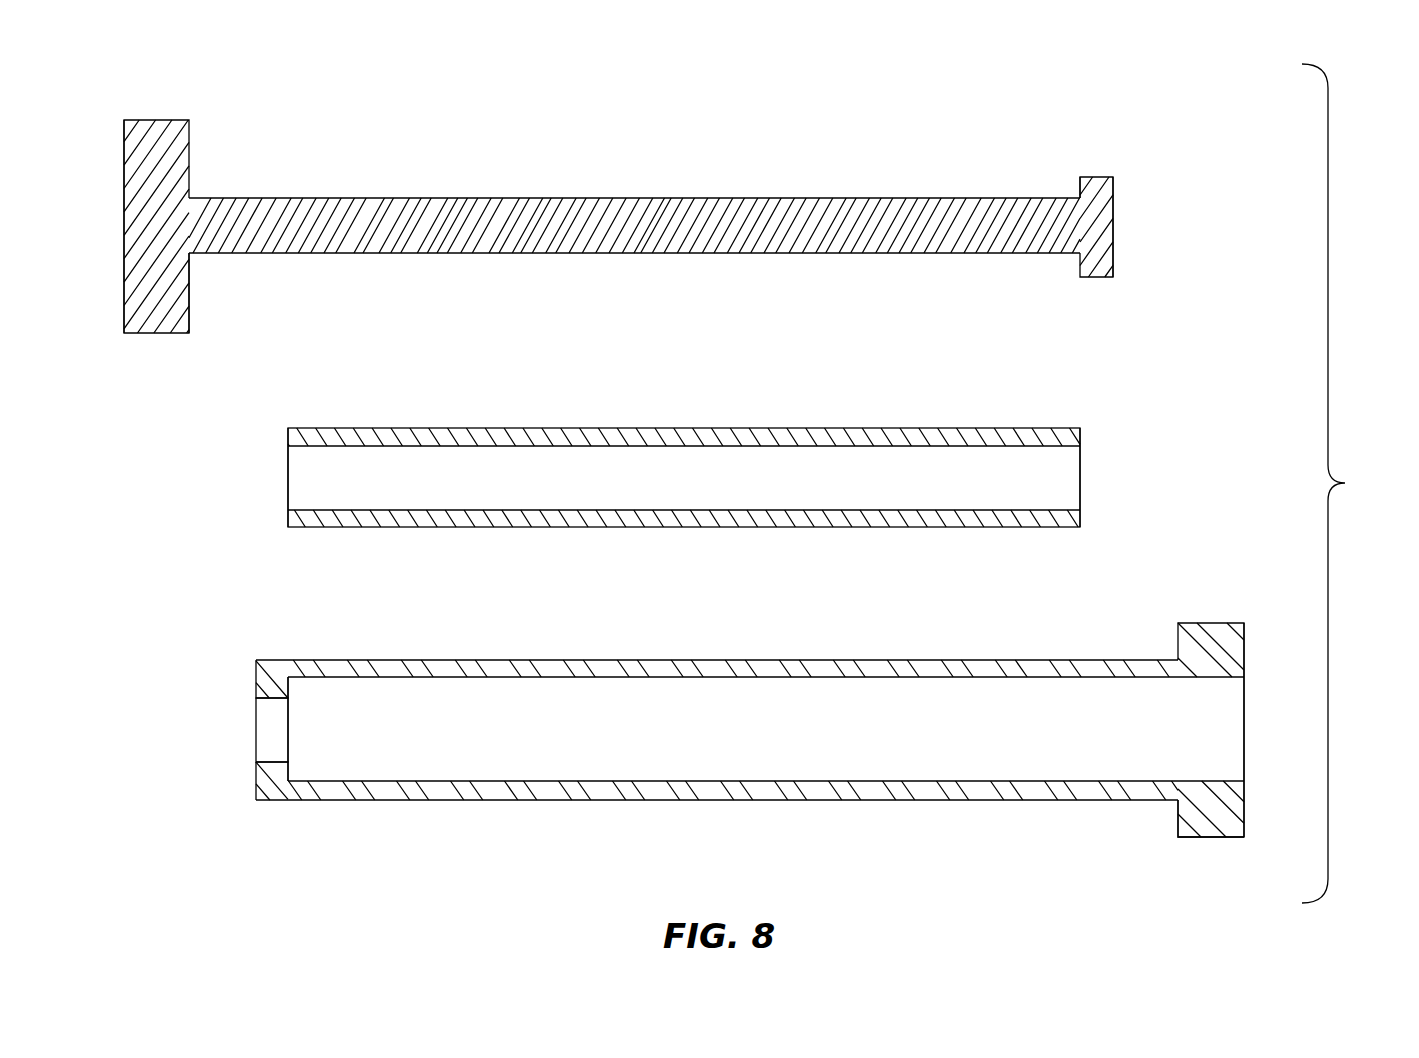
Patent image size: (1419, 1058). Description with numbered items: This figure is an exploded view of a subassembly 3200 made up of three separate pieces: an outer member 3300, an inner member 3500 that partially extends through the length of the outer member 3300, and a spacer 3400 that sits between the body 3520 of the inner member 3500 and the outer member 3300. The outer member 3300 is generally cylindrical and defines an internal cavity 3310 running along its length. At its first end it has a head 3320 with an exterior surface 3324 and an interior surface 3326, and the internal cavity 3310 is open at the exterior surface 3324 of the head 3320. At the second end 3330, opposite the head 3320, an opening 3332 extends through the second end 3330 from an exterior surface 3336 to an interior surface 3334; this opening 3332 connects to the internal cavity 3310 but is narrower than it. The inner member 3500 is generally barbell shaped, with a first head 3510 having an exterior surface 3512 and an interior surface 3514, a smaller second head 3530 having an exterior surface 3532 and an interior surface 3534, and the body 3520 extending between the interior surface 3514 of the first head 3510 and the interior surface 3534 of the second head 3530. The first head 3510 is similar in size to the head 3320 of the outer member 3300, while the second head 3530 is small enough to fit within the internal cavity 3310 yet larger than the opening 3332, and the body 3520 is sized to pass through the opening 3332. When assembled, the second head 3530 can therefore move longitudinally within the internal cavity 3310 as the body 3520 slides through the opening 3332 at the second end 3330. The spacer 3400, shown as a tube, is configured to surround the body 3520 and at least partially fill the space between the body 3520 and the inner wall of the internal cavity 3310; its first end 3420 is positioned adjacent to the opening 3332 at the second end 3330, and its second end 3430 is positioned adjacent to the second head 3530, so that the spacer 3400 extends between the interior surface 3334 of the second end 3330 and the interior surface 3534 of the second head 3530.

The subassembly 3200 is at (1355, 483).
The outer member 3300 is at (681, 722).
The internal cavity 3310 is at (1218, 677).
The head 3320 is at (1191, 722).
The exterior surface 3324 is at (1290, 627).
The interior surface 3326 is at (1178, 820).
The second end 3330 is at (256, 677).
The opening 3332 is at (257, 742).
The interior surface 3334 is at (288, 768).
The exterior surface 3336 is at (256, 777).
The spacer 3400 is at (667, 426).
The first end 3420 is at (288, 436).
The second end 3430 is at (1080, 440).
The inner member 3500 is at (628, 193).
The first head 3510 is at (163, 193).
The exterior surface 3512 is at (124, 307).
The interior surface 3514 is at (189, 313).
The body 3520 is at (510, 198).
The second head 3530 is at (1087, 199).
The exterior surface 3532 is at (1114, 243).
The interior surface 3534 is at (1079, 185).